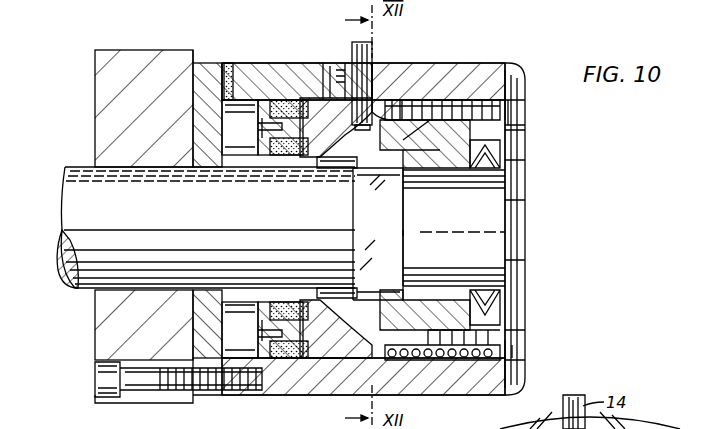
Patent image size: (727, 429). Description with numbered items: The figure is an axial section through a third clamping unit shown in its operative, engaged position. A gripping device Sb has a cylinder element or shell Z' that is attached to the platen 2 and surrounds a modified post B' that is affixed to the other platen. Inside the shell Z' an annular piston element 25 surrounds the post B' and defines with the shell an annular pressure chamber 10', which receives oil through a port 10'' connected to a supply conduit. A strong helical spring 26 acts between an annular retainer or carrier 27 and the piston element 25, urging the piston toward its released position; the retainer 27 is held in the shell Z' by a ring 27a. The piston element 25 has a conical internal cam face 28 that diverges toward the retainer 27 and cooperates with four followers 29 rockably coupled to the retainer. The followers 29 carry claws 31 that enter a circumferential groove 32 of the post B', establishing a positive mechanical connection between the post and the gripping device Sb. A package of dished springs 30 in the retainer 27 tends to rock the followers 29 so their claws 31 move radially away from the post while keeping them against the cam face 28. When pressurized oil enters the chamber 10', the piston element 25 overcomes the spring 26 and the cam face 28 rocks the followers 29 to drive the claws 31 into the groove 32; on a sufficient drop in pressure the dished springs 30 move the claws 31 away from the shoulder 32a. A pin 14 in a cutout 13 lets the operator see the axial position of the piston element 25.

The platen 2 is at (105, 86).
The post B' is at (206, 212).
The gripping device Sb is at (492, 62).
The annular pressure chamber 10' is at (240, 229).
The port 10'' is at (236, 64).
The cylinder element or shell Z' is at (280, 197).
The annular piston element 25 is at (296, 72).
The cutout 13 is at (336, 68).
The pin 14 is at (372, 50).
The conical internal cam face 28 is at (380, 110).
The helical spring 26 is at (448, 102).
The followers 29 is at (425, 225).
The dished springs 30 is at (495, 155).
The annular retainer or carrier 27 is at (508, 133).
The ring 27a is at (511, 358).
The claws 31 is at (405, 178).
The circumferential groove 32 is at (378, 234).
The shoulder 32a is at (404, 234).